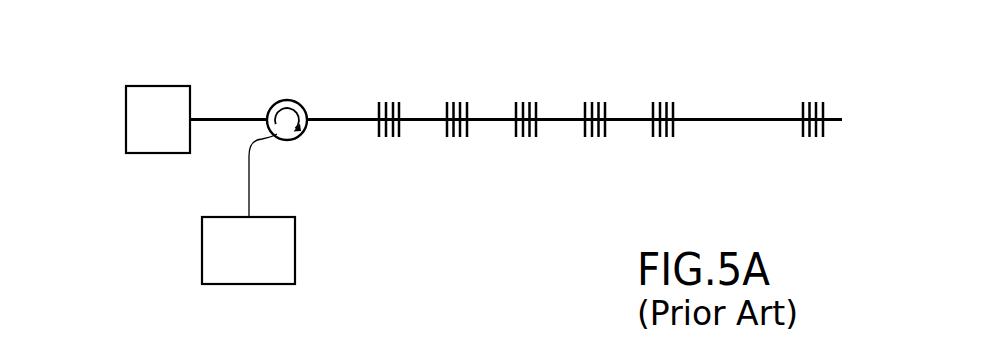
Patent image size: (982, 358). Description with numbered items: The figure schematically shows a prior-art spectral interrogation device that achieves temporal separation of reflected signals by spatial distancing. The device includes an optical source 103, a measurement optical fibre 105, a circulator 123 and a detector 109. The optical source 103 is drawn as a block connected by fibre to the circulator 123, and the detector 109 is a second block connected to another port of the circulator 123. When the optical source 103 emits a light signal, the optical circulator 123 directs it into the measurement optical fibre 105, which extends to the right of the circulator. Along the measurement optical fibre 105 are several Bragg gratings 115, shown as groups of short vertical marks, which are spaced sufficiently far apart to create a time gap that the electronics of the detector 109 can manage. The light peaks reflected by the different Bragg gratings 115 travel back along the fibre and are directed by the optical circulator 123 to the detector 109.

The optical source 103 is at (132, 105).
The circulator 123 is at (270, 106).
The detector 109 is at (208, 238).
The measurement optical fibre 105 is at (575, 116).
The Bragg gratings 115 is at (592, 138).